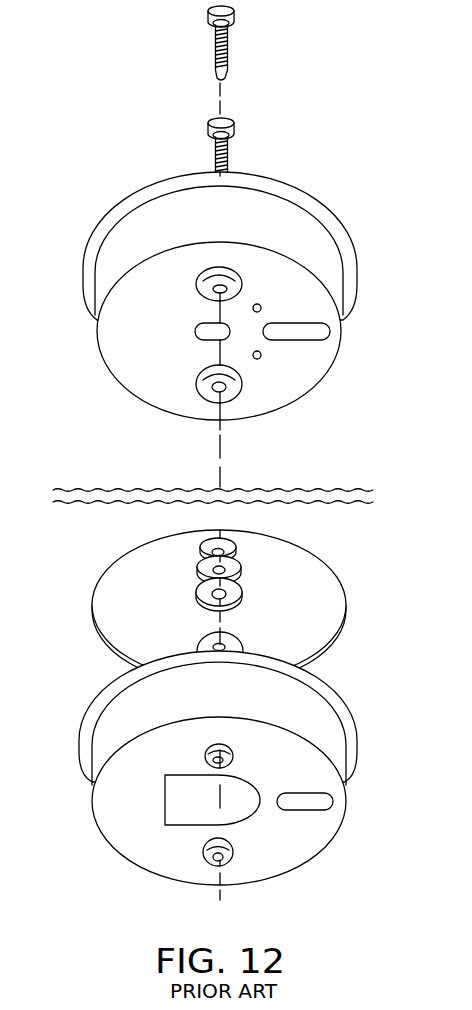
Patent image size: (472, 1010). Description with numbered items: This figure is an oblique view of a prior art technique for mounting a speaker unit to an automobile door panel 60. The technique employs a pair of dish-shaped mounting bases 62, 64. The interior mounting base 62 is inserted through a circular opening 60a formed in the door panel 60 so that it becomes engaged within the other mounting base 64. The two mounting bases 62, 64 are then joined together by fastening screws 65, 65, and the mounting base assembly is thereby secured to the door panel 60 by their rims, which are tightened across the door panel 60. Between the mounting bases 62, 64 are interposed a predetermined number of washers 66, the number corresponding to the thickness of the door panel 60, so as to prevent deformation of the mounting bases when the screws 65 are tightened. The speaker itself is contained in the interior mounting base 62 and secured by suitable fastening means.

The door panel 60 is at (84, 541).
The circular opening 60a is at (319, 605).
The interior mounting base 62 is at (122, 358).
The mounting base 64 is at (123, 830).
The fastening screws 65 is at (231, 22).
The washers 66 is at (194, 567).